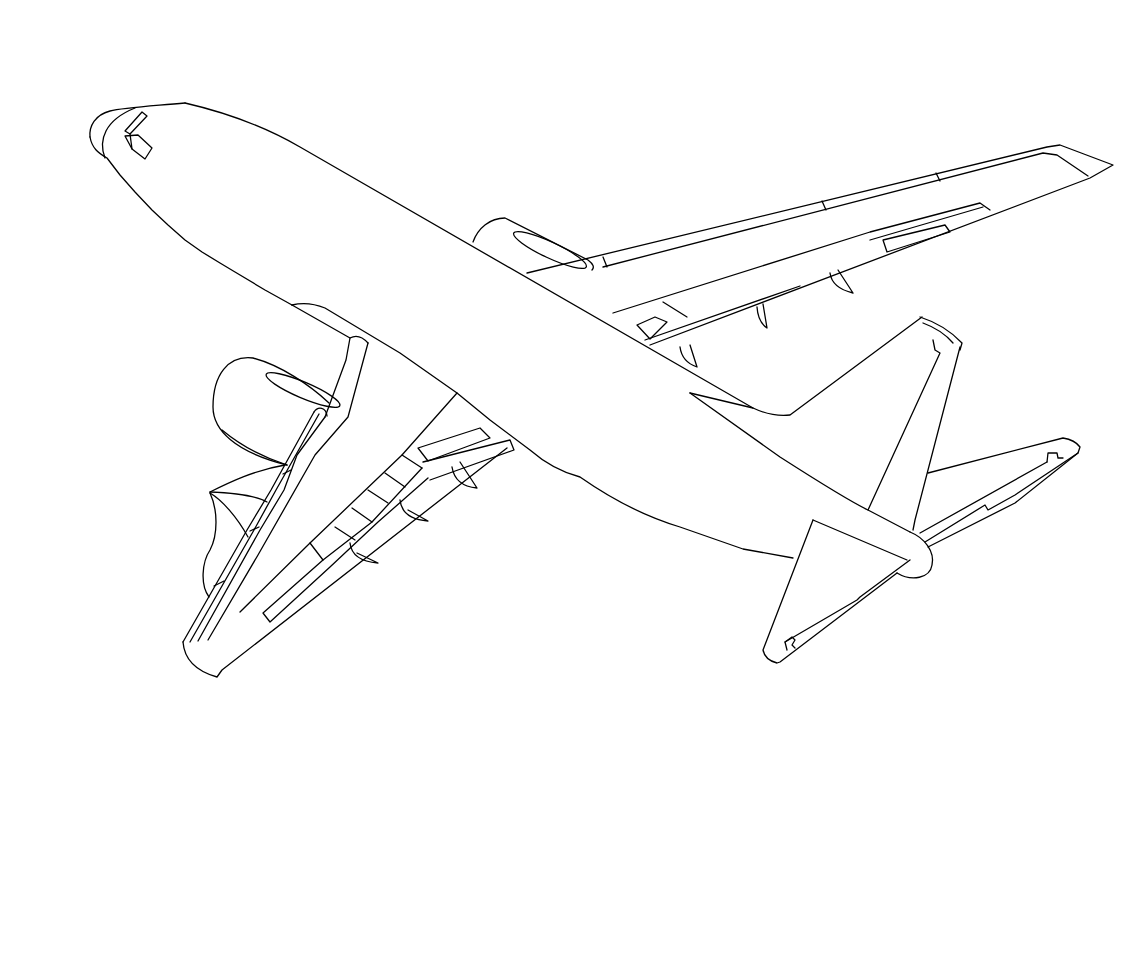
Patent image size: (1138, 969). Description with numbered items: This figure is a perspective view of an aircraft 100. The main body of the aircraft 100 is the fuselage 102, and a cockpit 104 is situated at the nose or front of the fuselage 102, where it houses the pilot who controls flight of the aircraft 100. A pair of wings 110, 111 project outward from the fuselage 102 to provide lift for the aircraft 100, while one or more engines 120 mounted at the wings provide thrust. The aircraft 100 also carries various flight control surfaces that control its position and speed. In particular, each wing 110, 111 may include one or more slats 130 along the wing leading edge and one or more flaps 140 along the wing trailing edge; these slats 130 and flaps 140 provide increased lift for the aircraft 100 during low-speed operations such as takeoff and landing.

The aircraft 100 is at (595, 608).
The fuselage 102 is at (352, 198).
The cockpit 104 is at (157, 128).
The wing 110 is at (232, 677).
The wing 111 is at (945, 167).
The engine 120 is at (236, 375).
The slat 130 is at (211, 492).
The flap 140 is at (398, 515).